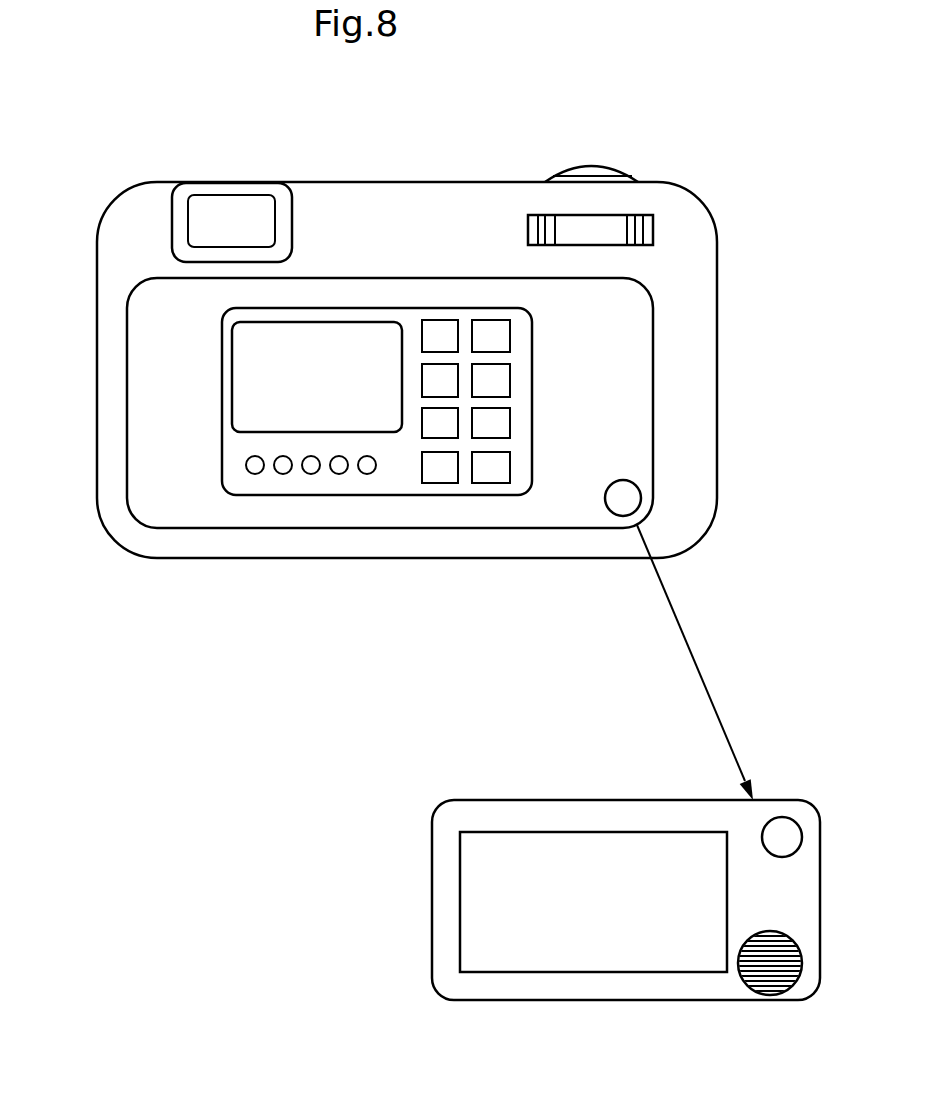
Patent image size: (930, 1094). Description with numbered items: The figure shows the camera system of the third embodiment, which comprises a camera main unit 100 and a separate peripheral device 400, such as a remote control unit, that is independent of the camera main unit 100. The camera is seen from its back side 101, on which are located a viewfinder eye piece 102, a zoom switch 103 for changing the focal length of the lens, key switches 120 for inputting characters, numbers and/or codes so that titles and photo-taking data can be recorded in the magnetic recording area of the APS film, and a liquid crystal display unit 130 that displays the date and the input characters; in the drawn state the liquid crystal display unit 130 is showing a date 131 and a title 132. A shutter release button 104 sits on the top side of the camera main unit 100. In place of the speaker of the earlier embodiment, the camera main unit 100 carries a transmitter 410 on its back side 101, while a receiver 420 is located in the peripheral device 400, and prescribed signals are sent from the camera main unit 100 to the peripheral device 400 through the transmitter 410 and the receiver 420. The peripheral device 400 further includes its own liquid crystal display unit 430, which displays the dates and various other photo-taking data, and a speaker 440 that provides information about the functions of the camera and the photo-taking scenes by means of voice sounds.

The camera main unit 100 is at (476, 168).
The back side 101 is at (375, 200).
The viewfinder eye piece 102 is at (238, 212).
The zoom switch 103 is at (591, 237).
The shutter release button 104 is at (590, 168).
The key switches 120 is at (428, 483).
The liquid crystal display unit 130 is at (358, 422).
The date 131 is at (243, 358).
The title 132 is at (200, 399).
The peripheral device 400 is at (565, 1002).
The transmitter 410 is at (626, 503).
The receiver 420 is at (783, 830).
The liquid crystal display unit 430 is at (665, 973).
The speaker 440 is at (773, 995).